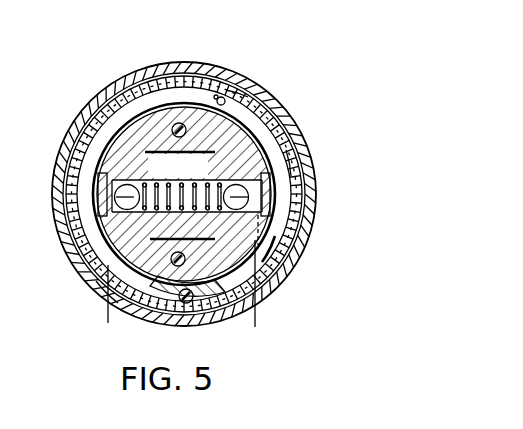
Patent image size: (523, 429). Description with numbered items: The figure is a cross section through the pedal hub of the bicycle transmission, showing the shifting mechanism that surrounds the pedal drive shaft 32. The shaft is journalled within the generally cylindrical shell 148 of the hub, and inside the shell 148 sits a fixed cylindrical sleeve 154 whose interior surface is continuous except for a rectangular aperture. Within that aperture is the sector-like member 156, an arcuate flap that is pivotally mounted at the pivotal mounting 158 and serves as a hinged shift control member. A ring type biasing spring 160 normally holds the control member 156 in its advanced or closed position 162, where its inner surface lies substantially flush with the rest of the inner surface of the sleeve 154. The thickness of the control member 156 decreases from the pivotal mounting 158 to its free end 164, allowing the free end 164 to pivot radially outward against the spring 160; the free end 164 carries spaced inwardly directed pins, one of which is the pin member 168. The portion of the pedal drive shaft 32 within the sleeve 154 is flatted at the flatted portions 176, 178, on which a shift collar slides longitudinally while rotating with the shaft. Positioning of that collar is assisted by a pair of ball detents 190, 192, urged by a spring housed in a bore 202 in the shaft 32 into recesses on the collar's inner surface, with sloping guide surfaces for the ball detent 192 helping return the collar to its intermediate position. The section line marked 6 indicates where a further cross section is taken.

The cylindrical shell 148 is at (198, 62).
The fixed cylindrical sleeve 154 is at (142, 98).
The sector-like member 156 is at (265, 96).
The pivotal mounting 158 is at (230, 82).
The flatted portion 176 is at (281, 108).
The ring type biasing spring 160 is at (277, 133).
The pedal drive shaft 32 is at (182, 184).
The bore 202 is at (288, 160).
The ball detent 190 is at (270, 188).
The pin member 168 is at (268, 224).
The closed position 162 is at (276, 250).
The free end 164 is at (268, 272).
The ball detent 192 is at (96, 168).
The flatted portion 178 is at (104, 288).
The section line 6- 6 is at (181, 292).